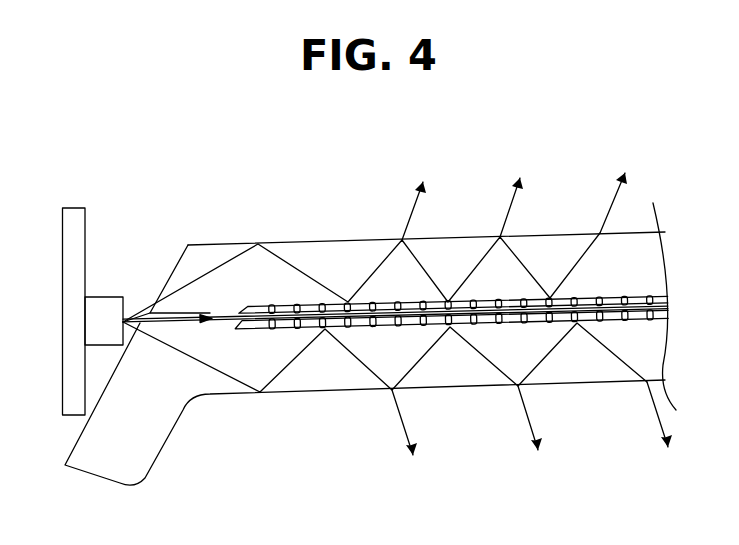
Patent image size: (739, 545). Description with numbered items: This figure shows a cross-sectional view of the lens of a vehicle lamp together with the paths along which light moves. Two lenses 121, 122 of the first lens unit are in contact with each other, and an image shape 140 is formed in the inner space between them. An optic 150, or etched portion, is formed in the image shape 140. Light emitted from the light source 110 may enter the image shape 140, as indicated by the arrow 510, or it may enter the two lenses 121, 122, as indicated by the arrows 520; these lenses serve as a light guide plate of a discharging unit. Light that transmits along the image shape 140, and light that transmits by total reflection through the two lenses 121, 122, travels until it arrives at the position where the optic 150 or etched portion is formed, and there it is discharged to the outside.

The light source 110 is at (102, 297).
The lens 121 is at (152, 428).
The lens 122 is at (322, 241).
The image shape 140 is at (333, 328).
The optic 150 is at (353, 328).
The arrow 510 is at (182, 313).
The arrows 520 is at (223, 258).